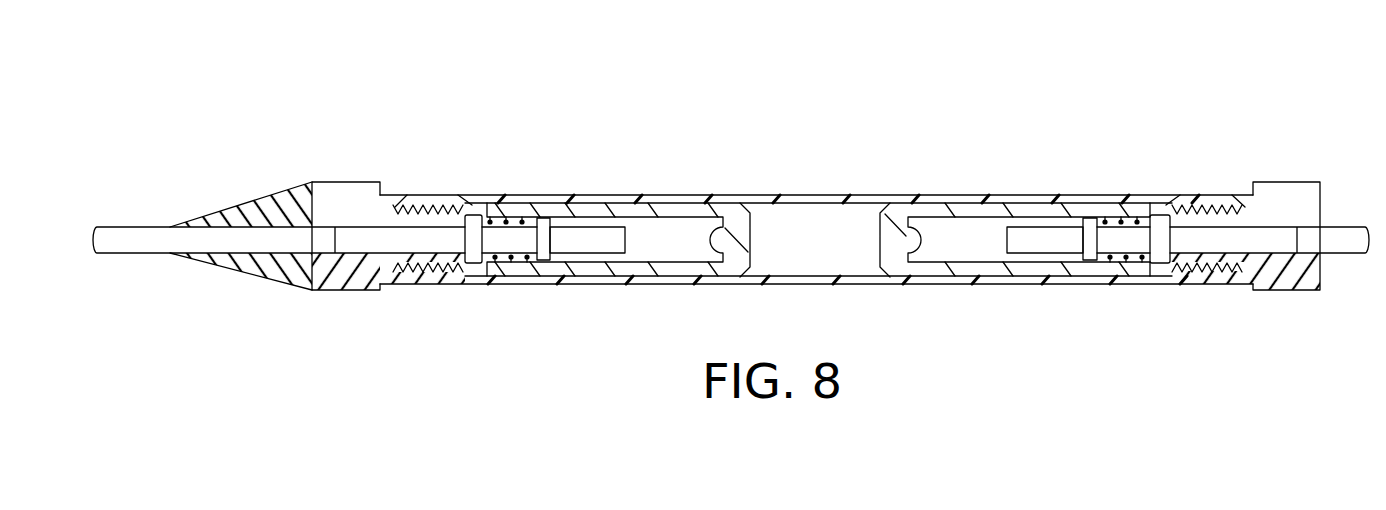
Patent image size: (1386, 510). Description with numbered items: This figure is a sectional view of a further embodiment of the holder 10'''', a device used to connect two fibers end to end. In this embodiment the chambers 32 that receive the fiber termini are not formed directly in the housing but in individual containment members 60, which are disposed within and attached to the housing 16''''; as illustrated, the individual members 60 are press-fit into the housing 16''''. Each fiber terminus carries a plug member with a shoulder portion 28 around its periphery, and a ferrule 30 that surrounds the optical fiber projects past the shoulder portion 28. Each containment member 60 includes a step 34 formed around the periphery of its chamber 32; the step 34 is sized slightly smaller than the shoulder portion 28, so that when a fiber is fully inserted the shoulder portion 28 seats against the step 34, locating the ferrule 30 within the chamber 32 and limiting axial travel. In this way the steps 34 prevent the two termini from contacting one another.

The holder 10'''' is at (731, 198).
The housing 16'''' is at (816, 208).
The shoulder portion 28 is at (472, 213).
The ferrule 30 is at (580, 235).
The chamber 32 is at (688, 250).
The step 34 is at (477, 285).
The containment member 60 is at (637, 270).